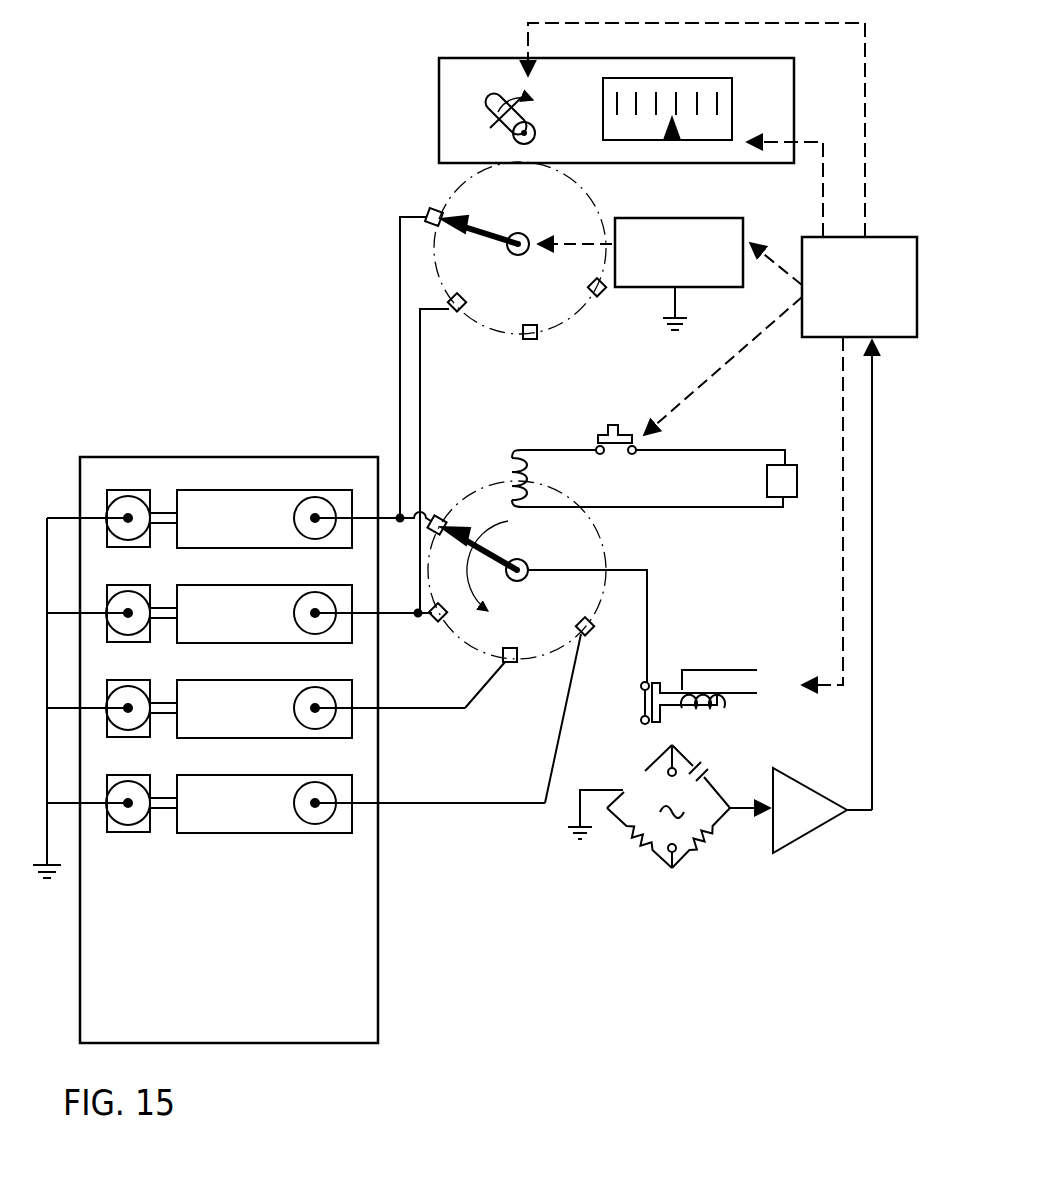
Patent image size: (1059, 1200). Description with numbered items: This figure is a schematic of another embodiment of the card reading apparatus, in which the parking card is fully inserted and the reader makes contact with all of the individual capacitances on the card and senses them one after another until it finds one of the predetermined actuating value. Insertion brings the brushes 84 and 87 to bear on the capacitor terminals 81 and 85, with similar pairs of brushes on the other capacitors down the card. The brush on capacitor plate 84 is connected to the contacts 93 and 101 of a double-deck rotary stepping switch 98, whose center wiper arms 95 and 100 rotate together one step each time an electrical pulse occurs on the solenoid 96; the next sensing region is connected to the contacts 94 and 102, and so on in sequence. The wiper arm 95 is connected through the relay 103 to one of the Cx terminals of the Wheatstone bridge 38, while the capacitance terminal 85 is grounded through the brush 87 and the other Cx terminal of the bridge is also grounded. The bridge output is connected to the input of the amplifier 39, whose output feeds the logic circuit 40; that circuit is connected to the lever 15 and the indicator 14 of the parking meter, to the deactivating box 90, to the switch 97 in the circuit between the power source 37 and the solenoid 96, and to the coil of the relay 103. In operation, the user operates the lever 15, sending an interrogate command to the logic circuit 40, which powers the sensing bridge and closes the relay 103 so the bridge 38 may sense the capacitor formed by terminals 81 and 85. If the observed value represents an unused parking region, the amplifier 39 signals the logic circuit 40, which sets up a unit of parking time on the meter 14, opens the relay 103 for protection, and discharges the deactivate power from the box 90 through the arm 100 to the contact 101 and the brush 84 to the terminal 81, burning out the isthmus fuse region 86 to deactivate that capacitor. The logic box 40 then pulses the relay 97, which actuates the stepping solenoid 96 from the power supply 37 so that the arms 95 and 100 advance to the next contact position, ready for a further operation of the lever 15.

The indicator 14 is at (730, 80).
The lever 15 is at (530, 114).
The deactivating box 90 is at (732, 218).
The logic circuit 40 is at (880, 240).
The contact 101 is at (428, 212).
The center wiper arm 100 is at (490, 242).
The contact 102 is at (466, 302).
The double-deck rotary stepping switch 98 is at (478, 322).
The solenoid 96 is at (510, 458).
The switch 97 is at (598, 440).
The power source 37 is at (782, 465).
The contact 93 is at (440, 517).
The wiper arm 95 is at (498, 556).
The contact 94 is at (438, 622).
The relay 103 is at (715, 718).
The Wheatstone bridge 38 is at (712, 825).
The amplifier 39 is at (808, 830).
The brush 87 is at (126, 500).
The capacitor terminal 85 is at (146, 490).
The isthmus fuse region 86 is at (165, 512).
The capacitor terminal 81 is at (258, 500).
The brush 84 is at (315, 500).